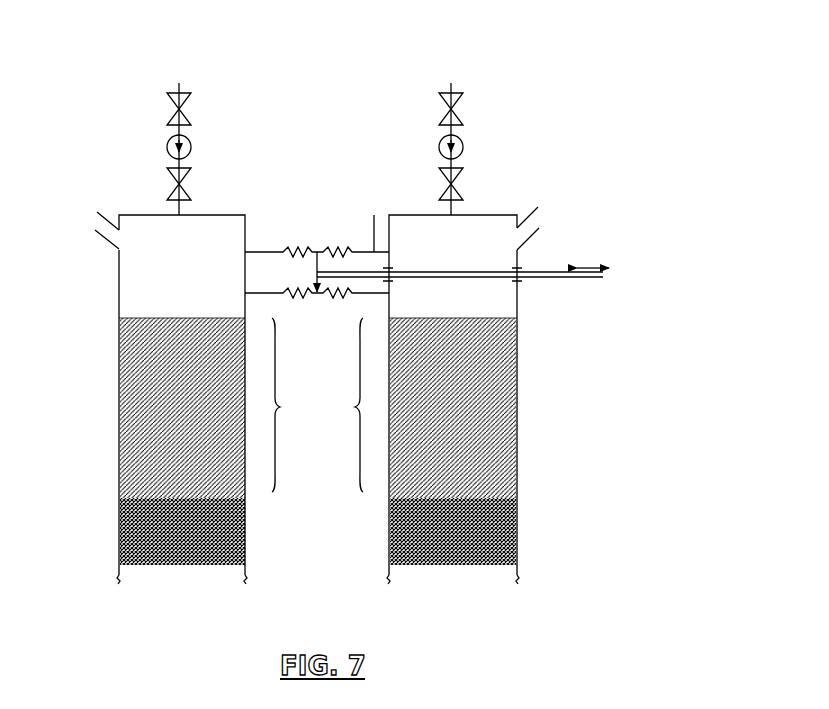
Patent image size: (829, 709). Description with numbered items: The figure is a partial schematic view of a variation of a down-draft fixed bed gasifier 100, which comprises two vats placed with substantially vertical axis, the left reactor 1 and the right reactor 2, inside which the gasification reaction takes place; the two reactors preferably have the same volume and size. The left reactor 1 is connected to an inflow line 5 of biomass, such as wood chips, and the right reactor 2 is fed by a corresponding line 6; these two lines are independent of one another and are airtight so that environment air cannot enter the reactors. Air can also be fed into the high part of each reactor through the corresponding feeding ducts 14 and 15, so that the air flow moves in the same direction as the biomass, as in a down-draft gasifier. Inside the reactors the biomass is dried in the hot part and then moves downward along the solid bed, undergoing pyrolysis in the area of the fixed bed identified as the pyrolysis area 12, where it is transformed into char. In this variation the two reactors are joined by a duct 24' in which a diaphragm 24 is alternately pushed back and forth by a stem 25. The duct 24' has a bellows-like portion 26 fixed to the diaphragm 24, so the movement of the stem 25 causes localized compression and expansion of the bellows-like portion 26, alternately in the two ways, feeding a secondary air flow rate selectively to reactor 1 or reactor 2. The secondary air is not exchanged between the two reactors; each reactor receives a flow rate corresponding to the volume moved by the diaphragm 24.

The reactor 1 is at (232, 213).
The reactor 2 is at (398, 215).
The inflow line 5 is at (157, 127).
The feeding line 6 is at (478, 133).
The pyrolysis area 12 is at (317, 405).
The feeding duct 14 is at (99, 225).
The feeding duct 15 is at (530, 224).
The diaphragm 24 is at (336, 236).
The duct 24' is at (344, 174).
The stem 25 is at (552, 275).
The bellows-like portion 26 is at (292, 252).
The gasifier 100 is at (572, 412).